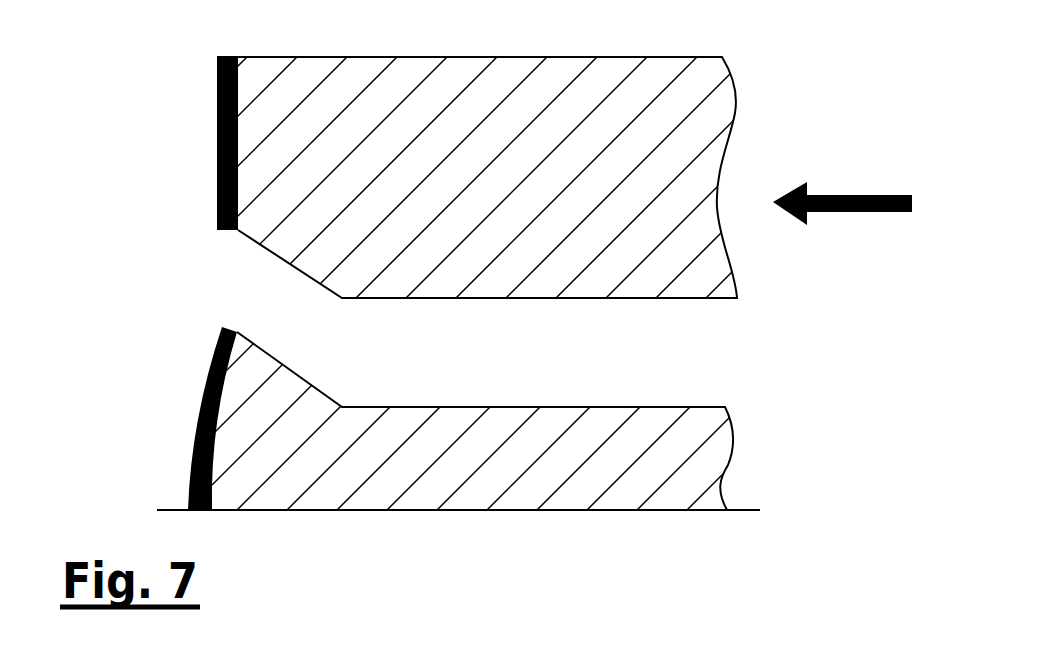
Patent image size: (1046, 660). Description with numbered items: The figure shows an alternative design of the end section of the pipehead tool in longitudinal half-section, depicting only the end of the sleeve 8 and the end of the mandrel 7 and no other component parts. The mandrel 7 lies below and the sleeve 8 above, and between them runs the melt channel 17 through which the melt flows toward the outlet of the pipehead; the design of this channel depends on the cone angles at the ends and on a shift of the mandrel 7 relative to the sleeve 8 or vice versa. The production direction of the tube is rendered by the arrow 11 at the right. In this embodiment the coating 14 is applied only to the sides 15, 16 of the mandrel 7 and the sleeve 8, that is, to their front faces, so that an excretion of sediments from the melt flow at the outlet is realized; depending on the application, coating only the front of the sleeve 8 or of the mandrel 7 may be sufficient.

The mandrel 7 is at (647, 467).
The sleeve 8 is at (573, 118).
The arrow 11 is at (837, 194).
The coating 14 is at (217, 210).
The side of the mandrel 15 is at (191, 394).
The side of the sleeve 16 is at (205, 172).
The melt channel 17 is at (585, 334).